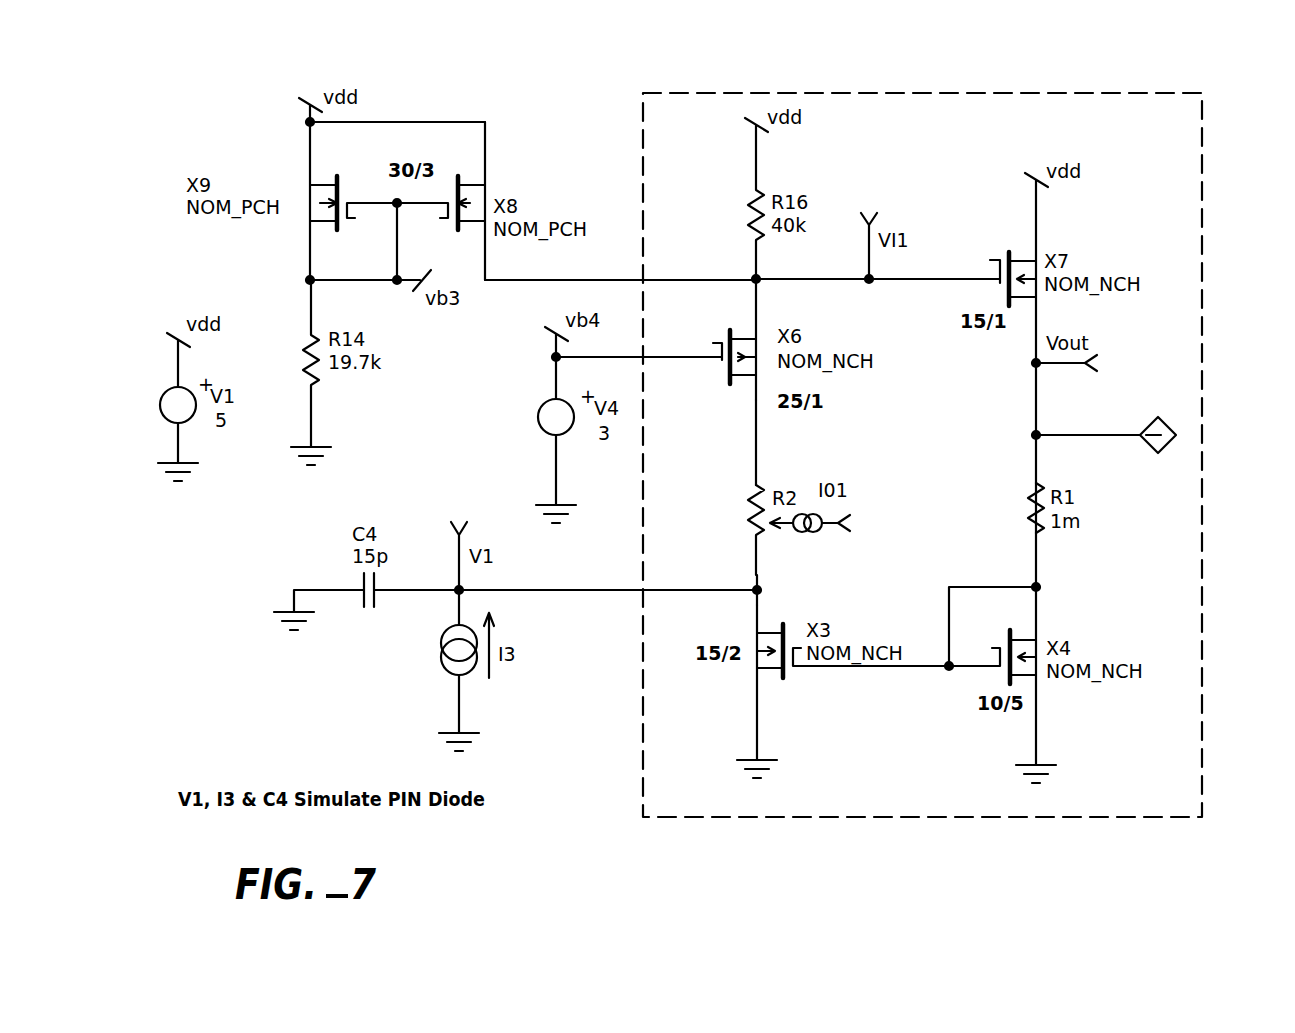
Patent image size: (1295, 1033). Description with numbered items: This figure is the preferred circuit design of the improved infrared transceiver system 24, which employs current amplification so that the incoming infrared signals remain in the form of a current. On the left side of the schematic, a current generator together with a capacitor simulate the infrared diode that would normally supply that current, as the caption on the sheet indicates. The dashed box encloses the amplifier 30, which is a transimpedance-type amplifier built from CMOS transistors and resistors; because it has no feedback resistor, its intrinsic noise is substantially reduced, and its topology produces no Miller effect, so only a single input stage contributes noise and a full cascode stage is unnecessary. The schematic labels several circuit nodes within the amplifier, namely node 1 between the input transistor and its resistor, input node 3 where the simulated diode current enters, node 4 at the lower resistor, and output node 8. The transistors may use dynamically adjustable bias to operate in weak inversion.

The improved infrared transceiver system 24 is at (1216, 91).
The amplifier 30 is at (643, 770).
The node 1 (drain of X6 / R2 top) 1 is at (764, 442).
The node 3 (input node) 3 is at (766, 590).
The node 4 (R1 bottom / X4 drain) 4 is at (1003, 585).
The node 8 (output node) 8 is at (1104, 439).